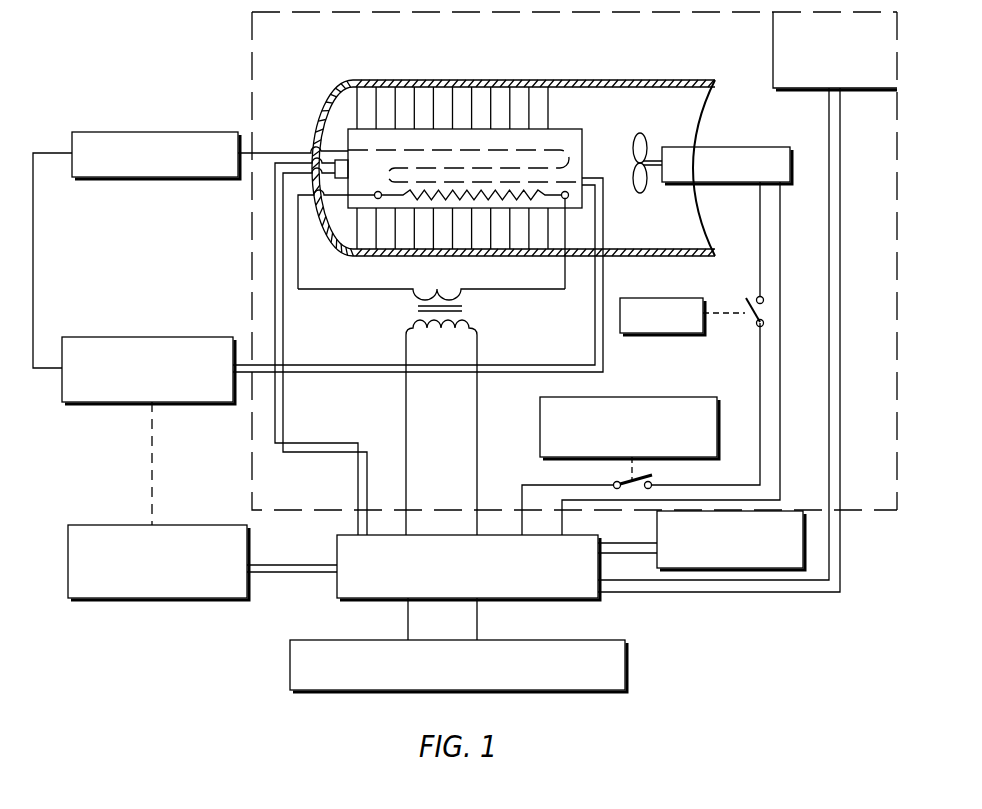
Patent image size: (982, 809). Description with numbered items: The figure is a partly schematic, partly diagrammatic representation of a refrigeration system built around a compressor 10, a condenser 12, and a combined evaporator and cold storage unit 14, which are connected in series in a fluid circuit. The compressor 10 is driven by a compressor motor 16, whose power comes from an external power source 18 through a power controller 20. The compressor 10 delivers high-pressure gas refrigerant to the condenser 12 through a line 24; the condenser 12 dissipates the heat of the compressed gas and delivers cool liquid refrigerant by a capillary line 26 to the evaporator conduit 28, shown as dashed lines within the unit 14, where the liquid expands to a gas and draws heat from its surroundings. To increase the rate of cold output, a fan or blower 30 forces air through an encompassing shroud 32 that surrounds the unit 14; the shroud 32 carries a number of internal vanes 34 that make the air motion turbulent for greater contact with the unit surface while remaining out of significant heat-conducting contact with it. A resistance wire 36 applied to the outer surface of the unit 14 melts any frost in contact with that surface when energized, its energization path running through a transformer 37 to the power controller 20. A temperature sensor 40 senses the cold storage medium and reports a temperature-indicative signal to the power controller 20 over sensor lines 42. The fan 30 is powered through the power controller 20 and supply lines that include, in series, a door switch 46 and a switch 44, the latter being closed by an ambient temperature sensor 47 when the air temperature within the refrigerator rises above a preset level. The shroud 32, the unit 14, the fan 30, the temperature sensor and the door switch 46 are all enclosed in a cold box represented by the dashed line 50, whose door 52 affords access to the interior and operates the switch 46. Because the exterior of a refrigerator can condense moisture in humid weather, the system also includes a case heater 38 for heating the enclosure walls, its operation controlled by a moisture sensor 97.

The compressor 10 is at (118, 336).
The condenser 12 is at (134, 178).
The combined evaporator and cold storage unit 14 is at (569, 128).
The compressor motor 16 is at (94, 524).
The external power source 18 is at (630, 648).
The power controller 20 is at (336, 587).
The line 24 is at (34, 262).
The capillary line 26 is at (290, 150).
The evaporator conduit 28 is at (413, 148).
The fan or blower 30 is at (741, 147).
The shroud 32 is at (668, 79).
The vanes 34 is at (528, 105).
The resistance wire 36 is at (552, 190).
The transformer 37 is at (465, 308).
The case heater 38 is at (806, 89).
The temperature sensor 40 is at (340, 159).
The sensor lines 42 is at (287, 336).
The switch 44 is at (614, 479).
The door switch 46 is at (753, 322).
The temperature sensor 47 is at (540, 433).
The enclosure 50 is at (862, 514).
The door 52 is at (667, 335).
The moisture sensor 97 is at (790, 508).